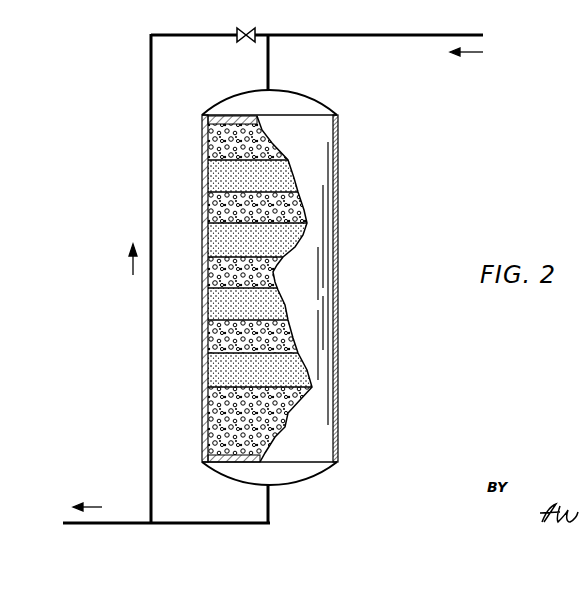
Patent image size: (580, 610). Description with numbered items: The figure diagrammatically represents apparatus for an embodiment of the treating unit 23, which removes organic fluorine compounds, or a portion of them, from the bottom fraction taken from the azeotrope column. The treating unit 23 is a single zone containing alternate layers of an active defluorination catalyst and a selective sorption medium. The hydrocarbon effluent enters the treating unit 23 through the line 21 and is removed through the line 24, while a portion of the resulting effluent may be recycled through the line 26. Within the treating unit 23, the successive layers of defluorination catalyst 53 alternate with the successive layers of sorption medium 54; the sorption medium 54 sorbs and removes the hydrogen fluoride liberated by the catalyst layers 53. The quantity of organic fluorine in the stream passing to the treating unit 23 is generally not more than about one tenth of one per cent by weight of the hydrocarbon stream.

The line 21 is at (393, 37).
The treating unit 23 is at (317, 445).
The line 24 is at (252, 525).
The line 26 is at (149, 356).
The layers of defluorination catalyst 53 is at (300, 233).
The layers of sorption medium 54 is at (222, 430).